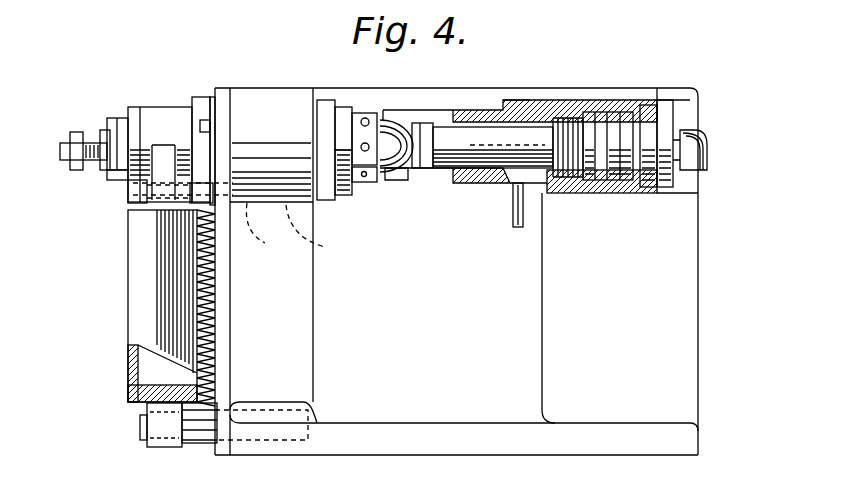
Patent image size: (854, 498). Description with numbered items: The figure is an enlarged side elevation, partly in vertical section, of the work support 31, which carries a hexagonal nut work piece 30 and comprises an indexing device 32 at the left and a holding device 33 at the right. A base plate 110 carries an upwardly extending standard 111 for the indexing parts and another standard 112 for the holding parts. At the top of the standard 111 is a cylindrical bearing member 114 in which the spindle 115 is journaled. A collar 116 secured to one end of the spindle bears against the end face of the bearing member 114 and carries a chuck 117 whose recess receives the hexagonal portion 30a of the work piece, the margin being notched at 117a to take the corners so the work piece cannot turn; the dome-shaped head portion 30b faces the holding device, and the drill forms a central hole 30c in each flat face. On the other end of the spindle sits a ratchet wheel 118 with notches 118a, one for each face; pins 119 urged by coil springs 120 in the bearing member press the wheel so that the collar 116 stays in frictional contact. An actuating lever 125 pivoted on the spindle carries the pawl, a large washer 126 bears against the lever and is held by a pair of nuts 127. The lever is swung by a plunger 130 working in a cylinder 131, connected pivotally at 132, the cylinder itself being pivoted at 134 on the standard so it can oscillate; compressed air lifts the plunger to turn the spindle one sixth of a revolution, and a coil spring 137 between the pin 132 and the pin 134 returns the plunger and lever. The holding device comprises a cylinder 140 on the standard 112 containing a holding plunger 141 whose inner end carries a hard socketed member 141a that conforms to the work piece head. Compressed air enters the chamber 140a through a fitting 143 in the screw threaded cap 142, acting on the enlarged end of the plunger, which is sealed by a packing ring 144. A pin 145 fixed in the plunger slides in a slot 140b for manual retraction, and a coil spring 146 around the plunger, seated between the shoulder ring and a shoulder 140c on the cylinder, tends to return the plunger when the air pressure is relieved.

The work piece 30 is at (395, 176).
The hexagonal portion 30a is at (368, 120).
The dome-shaped head portion 30b is at (392, 178).
The hole 30c is at (362, 115).
The work support 31 is at (712, 353).
The indexing device 32 is at (86, 113).
The holding device 33 is at (710, 68).
The base plate 110 is at (440, 440).
The standard 111 is at (290, 295).
The standard 112 is at (677, 288).
The cylindrical bearing member 114 is at (257, 97).
The spindle 115 is at (212, 100).
The collar 116 is at (332, 197).
The chuck 117 is at (342, 188).
The notches 117a is at (342, 112).
The ratchet wheel 118 is at (203, 100).
The notches 118a is at (202, 128).
The pins 119 is at (263, 230).
The coil springs 120 is at (325, 233).
The actuating lever 125 is at (163, 100).
The washer 126 is at (132, 110).
The nuts 127 is at (122, 183).
The plunger 130 is at (143, 213).
The cylinder 131 is at (143, 297).
The pivotal connection 132 is at (127, 203).
The pivot 134 is at (143, 428).
The coil spring 137 is at (197, 268).
The cylinder 140 is at (575, 110).
The chamber 140a is at (620, 177).
The slot 140b is at (510, 187).
The shoulder 140c is at (557, 110).
The holding plunger 141 is at (487, 130).
The socketed member 141a is at (423, 127).
The cap 142 is at (670, 118).
The fitting 143 is at (707, 142).
The packing ring 144 is at (615, 110).
The pin 145 is at (515, 227).
The coil spring 146 is at (553, 177).